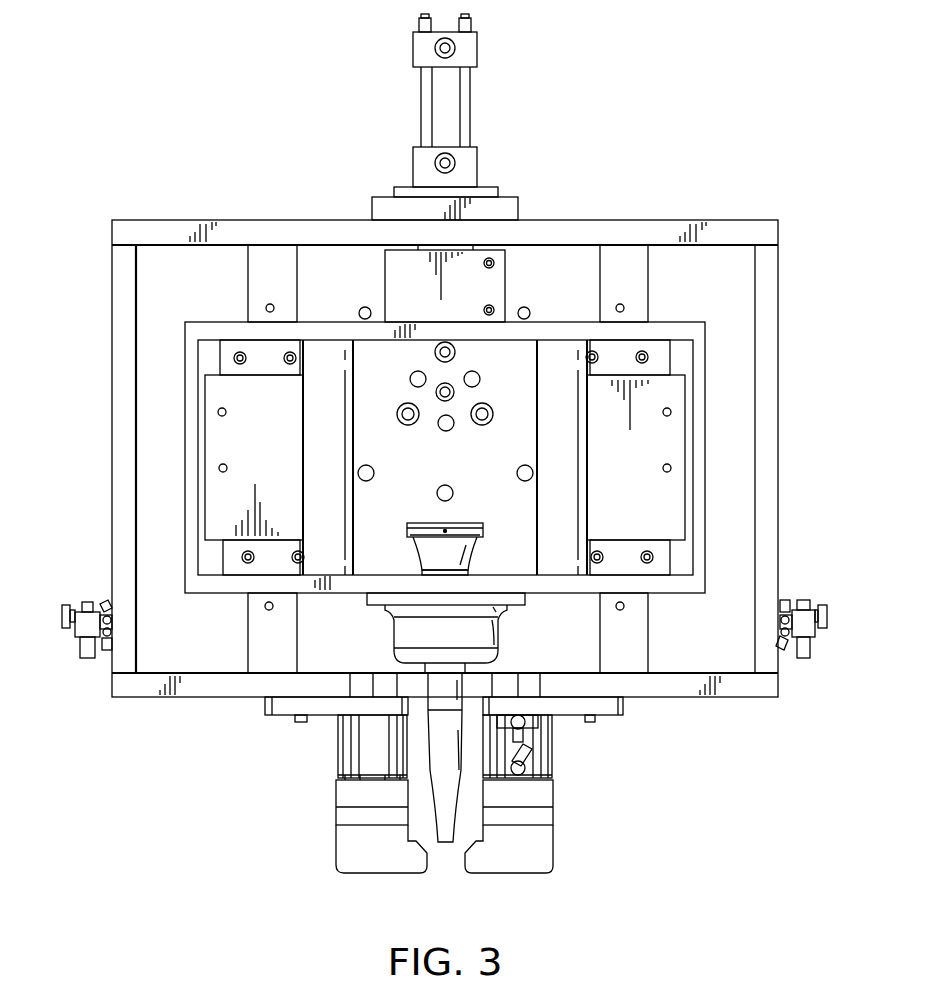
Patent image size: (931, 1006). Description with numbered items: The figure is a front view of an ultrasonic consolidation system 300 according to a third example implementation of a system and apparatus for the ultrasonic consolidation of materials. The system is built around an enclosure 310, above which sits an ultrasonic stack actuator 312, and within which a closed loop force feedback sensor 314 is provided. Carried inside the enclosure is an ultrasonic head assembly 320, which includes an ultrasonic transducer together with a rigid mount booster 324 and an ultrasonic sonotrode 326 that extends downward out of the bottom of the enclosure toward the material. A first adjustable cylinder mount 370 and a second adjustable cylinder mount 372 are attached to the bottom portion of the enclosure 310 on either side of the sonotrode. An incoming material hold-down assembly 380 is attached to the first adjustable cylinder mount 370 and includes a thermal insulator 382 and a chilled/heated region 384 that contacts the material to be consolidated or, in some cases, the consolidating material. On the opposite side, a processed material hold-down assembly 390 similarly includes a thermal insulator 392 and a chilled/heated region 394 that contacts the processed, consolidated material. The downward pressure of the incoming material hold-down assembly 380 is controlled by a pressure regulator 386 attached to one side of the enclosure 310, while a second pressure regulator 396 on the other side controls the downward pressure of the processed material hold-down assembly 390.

The ultrasonic consolidation system 300 is at (190, 162).
The enclosure 310 is at (112, 288).
The ultrasonic stack actuator 312 is at (413, 162).
The closed loop force feedback sensor 314 is at (385, 286).
The ultrasonic head assembly 320 is at (547, 321).
The rigid mount booster 324 is at (500, 633).
The ultrasonic sonotrode 326 is at (442, 845).
The first adjustable cylinder mount 370 is at (265, 704).
The second adjustable cylinder mount 372 is at (623, 704).
The incoming material hold-down assembly 380 is at (338, 756).
The thermal insulator 382 is at (336, 814).
The left foot 384 is at (349, 870).
The pressure regulator 386 is at (87, 600).
The processed material hold-down assembly 390 is at (553, 756).
The thermal insulator 392 is at (553, 814).
The right foot 394 is at (540, 873).
The pressure regulator 396 is at (804, 600).